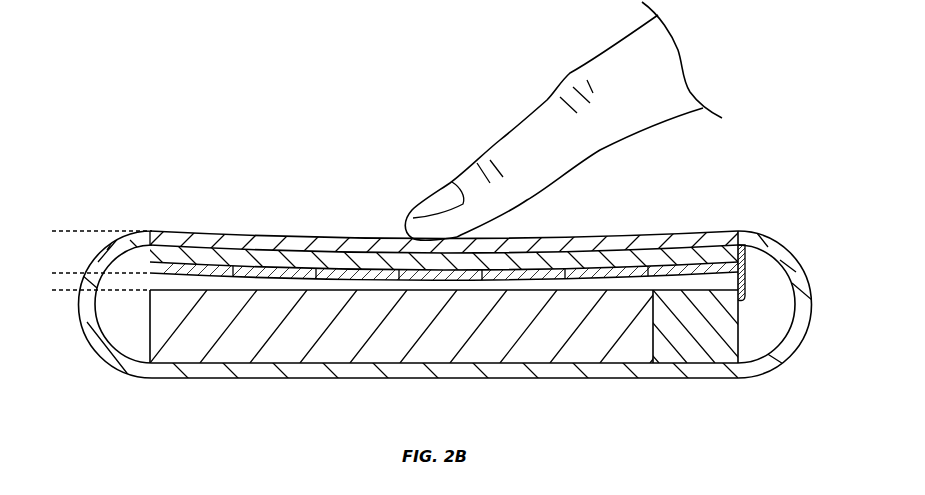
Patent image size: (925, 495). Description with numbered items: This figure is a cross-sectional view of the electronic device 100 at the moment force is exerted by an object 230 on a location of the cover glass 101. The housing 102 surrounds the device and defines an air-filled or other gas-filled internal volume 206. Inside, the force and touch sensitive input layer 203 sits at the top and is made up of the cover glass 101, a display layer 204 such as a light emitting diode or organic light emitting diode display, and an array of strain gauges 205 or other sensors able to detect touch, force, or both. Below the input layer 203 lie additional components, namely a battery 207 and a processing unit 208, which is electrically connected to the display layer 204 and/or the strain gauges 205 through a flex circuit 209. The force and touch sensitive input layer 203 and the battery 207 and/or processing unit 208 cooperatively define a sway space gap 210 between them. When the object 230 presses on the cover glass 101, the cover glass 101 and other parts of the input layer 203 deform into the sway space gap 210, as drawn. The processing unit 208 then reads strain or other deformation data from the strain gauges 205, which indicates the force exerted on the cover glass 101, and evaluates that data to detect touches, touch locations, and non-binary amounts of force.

The electronic device 100 is at (125, 160).
The cover glass 101 is at (240, 233).
The housing 102 is at (812, 307).
The force and touch sensitive input layer 203 is at (46, 231).
The display layer 204 is at (367, 253).
The array of strain gauges 205 is at (537, 272).
The internal volume 206 is at (118, 331).
The battery 207 is at (362, 366).
The processing unit 208 is at (703, 366).
The flex circuit 209 is at (748, 272).
The sway space gap 210 is at (52, 273).
The object 230 is at (502, 138).